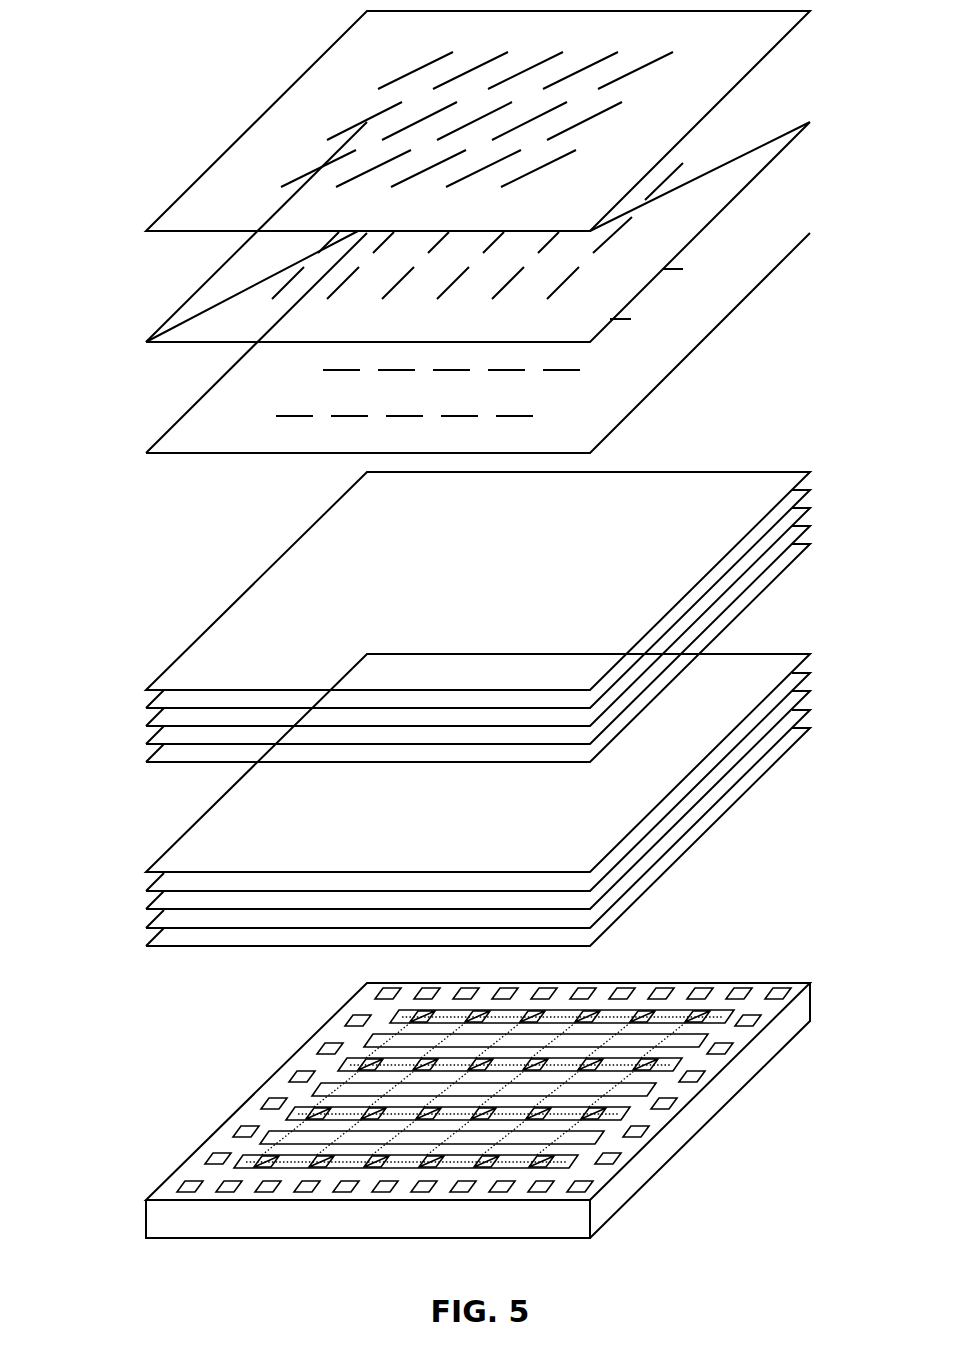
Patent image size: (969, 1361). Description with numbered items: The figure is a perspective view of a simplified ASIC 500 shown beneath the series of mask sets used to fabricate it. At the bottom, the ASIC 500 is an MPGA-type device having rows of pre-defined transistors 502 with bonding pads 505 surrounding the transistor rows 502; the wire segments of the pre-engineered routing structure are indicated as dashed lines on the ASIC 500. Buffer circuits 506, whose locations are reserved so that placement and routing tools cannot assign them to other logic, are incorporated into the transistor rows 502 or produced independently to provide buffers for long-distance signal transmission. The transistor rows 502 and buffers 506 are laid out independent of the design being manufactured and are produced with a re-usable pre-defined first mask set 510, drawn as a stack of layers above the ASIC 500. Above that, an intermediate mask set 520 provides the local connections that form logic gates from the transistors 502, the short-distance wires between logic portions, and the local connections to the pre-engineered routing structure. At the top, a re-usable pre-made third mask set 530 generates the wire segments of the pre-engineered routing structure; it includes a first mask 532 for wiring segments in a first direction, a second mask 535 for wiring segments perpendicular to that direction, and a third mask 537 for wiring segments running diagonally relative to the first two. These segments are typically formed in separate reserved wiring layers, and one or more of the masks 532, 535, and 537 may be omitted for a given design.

The ASIC 500 is at (140, 1122).
The transistor rows 502 is at (622, 1113).
The bonding pads 505 is at (722, 1050).
The buffer circuits 506 is at (267, 1157).
The first mask set 510 is at (138, 855).
The intermediate mask set 520 is at (138, 671).
The third mask set 530 is at (110, 213).
The first mask 532 is at (180, 433).
The second mask 535 is at (184, 310).
The third mask 537 is at (184, 212).